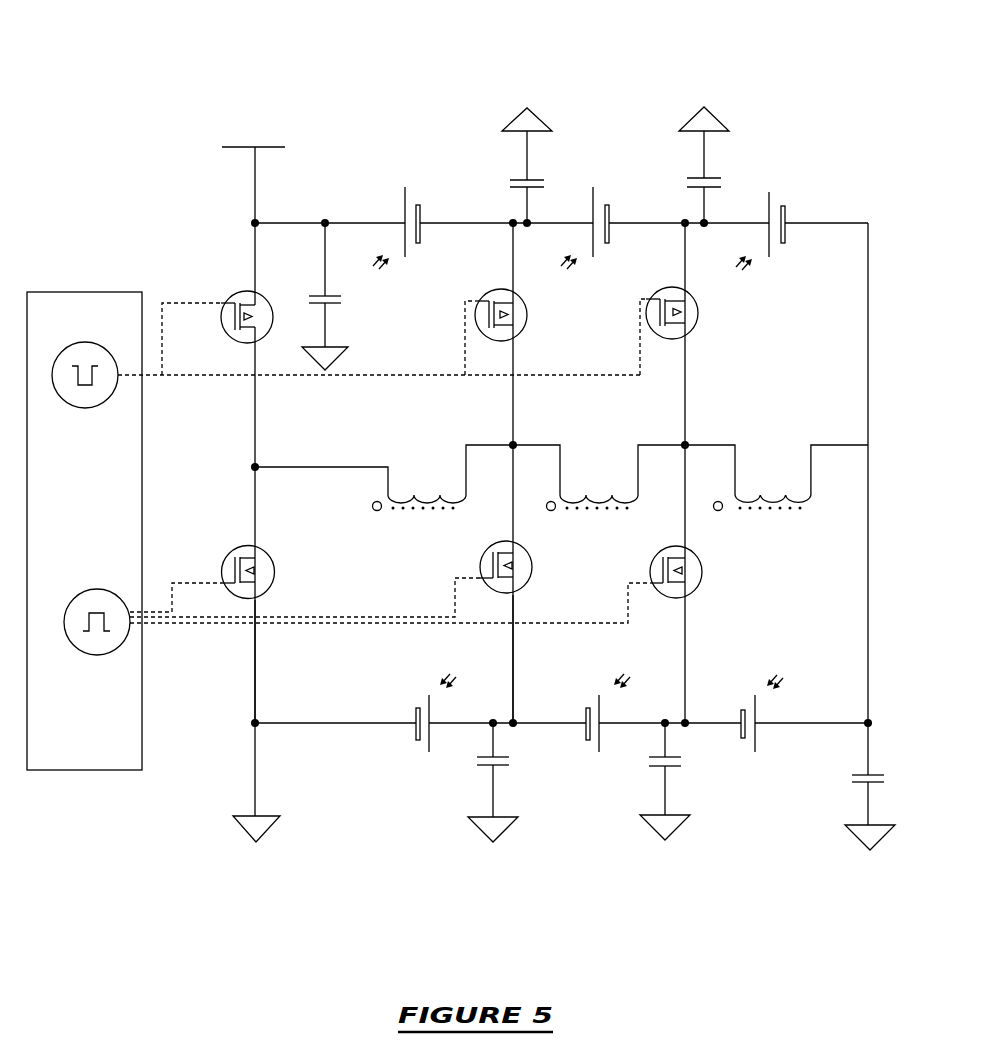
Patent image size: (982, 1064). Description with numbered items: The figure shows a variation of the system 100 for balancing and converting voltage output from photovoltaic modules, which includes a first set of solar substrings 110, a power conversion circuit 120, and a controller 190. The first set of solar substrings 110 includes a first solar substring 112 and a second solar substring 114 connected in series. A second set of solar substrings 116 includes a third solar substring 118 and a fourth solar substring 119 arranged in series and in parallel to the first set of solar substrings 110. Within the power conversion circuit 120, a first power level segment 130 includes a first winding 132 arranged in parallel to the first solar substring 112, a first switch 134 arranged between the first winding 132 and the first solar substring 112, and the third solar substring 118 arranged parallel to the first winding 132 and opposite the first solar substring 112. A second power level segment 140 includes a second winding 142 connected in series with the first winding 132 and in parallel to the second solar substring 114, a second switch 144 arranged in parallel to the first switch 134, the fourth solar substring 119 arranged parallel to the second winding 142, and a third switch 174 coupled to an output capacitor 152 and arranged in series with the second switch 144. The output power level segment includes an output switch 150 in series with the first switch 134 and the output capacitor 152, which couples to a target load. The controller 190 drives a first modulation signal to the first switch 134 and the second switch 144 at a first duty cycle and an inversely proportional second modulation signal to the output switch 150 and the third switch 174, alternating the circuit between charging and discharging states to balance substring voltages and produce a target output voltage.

The system 100 is at (166, 78).
The controller 190 is at (92, 292).
The output switch 150 is at (245, 291).
The third switch 174 is at (530, 306).
The first switch 134 is at (248, 546).
The second switch 144 is at (480, 560).
The third solar substring 118 is at (405, 187).
The fourth solar substring 119 is at (593, 187).
The second set of solar substrings 116 is at (769, 192).
The power conversion circuit 120 is at (826, 223).
The output capacitor 152 is at (331, 293).
The first winding 132 is at (407, 490).
The second winding 142 is at (580, 490).
The first power level segment 130 is at (258, 643).
The second power level segment 140 is at (513, 668).
The first solar substring 112 is at (429, 752).
The second solar substring 114 is at (599, 752).
The first set of solar substrings 110 is at (755, 752).